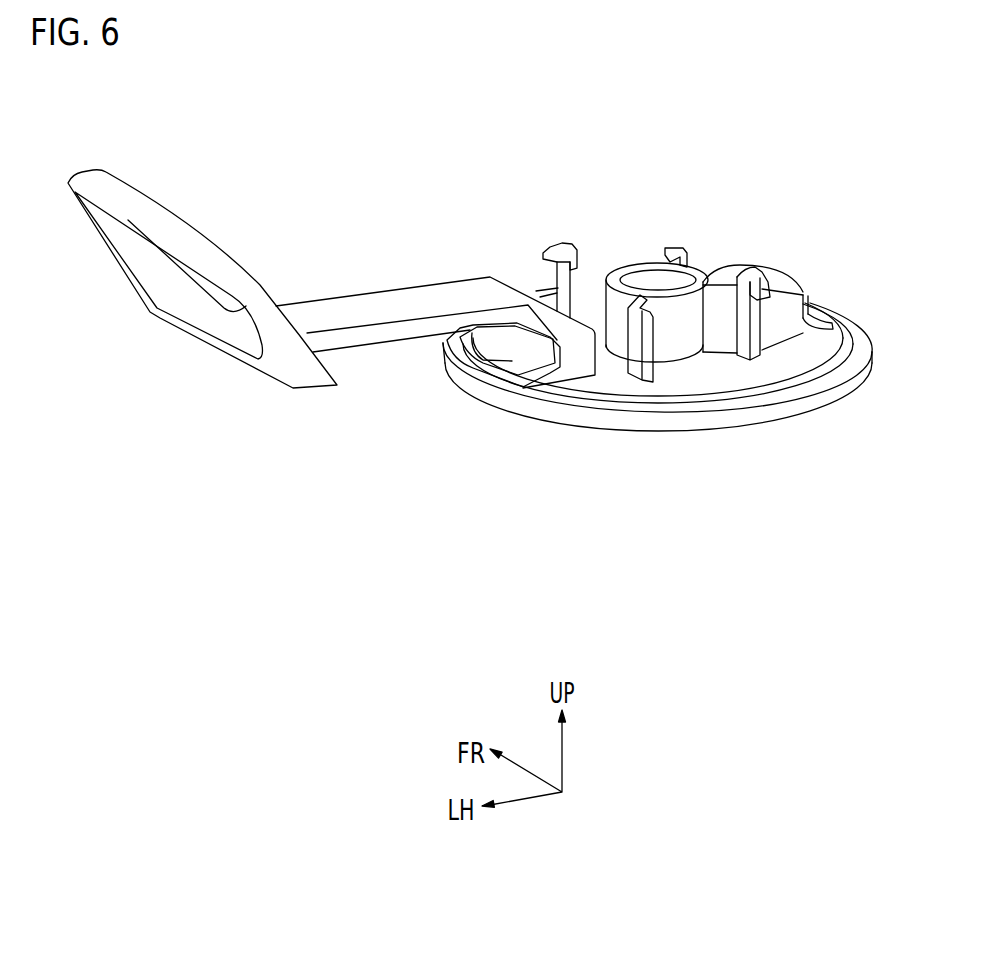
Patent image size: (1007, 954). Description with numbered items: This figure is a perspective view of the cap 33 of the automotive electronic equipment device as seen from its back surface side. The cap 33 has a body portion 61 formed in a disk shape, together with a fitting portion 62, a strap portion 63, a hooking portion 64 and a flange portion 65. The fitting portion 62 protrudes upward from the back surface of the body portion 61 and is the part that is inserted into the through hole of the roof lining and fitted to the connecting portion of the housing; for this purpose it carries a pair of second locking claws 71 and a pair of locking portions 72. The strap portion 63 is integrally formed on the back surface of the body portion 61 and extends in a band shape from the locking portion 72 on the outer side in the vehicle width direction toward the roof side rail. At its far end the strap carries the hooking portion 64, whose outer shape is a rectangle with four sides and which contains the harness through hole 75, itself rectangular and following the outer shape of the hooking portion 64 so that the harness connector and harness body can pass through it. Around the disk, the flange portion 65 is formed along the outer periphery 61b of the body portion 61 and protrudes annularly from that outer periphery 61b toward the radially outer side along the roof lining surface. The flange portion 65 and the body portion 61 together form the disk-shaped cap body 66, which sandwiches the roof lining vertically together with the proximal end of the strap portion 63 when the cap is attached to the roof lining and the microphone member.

The cap 33 is at (694, 425).
The body portion 61 is at (707, 384).
The outer periphery 61b is at (855, 362).
The fitting portion 62 is at (805, 295).
The strap portion 63 is at (402, 300).
The hooking portion 64 is at (112, 258).
The flange portion 65 is at (797, 413).
The cap body 66 is at (657, 425).
The second locking claws 71 is at (550, 250).
The locking portions 72 is at (578, 267).
The harness through hole 75 is at (163, 288).